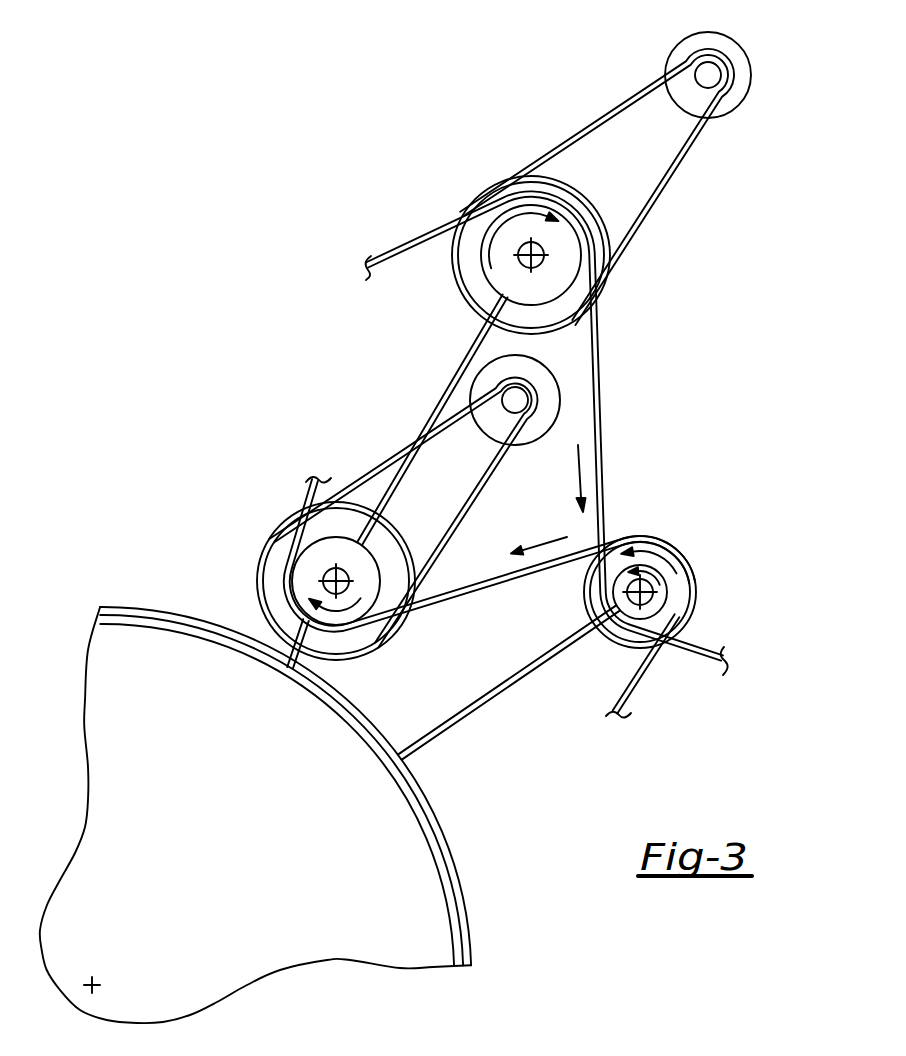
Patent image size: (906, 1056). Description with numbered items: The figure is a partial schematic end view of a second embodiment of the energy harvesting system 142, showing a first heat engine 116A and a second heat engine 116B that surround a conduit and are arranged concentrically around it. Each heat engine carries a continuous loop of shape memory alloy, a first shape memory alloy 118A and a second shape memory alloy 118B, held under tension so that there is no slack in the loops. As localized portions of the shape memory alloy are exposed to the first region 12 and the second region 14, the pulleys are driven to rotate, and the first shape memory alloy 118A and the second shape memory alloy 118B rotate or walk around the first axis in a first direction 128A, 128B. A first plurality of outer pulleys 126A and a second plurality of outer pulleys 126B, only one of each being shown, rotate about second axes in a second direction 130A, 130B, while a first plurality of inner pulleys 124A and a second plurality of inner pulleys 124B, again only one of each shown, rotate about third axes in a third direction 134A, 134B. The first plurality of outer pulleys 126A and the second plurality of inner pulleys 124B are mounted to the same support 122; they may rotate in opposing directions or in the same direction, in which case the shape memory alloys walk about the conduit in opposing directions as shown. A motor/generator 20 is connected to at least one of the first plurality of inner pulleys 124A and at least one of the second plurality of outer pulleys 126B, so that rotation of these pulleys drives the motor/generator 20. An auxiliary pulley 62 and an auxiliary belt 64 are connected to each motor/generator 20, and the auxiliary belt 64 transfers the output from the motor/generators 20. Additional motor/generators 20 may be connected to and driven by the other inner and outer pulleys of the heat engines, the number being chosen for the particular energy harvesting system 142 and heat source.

The first region 12 is at (229, 867).
The second region 14 is at (239, 290).
The motor/generator 20 is at (565, 187).
The auxiliary pulley 62 is at (683, 90).
The auxiliary belt 64 is at (604, 112).
The first heat engine 116A is at (218, 494).
The second heat engine 116B is at (518, 138).
The first shape memory alloy 118A is at (472, 596).
The second shape memory alloy 118B is at (604, 406).
The support 122 is at (285, 648).
The first plurality of inner pulleys 124A is at (283, 588).
The second plurality of inner pulleys 124B is at (665, 607).
The first plurality of outer pulleys 126A is at (683, 594).
The second plurality of outer pulleys 126B is at (562, 278).
The first direction 128A is at (555, 545).
The first direction 128B is at (578, 468).
The second direction 130A is at (688, 560).
The second direction 130B is at (462, 223).
The third direction 134A is at (345, 612).
The third direction 134B is at (660, 582).
The energy harvesting system 142 is at (145, 377).